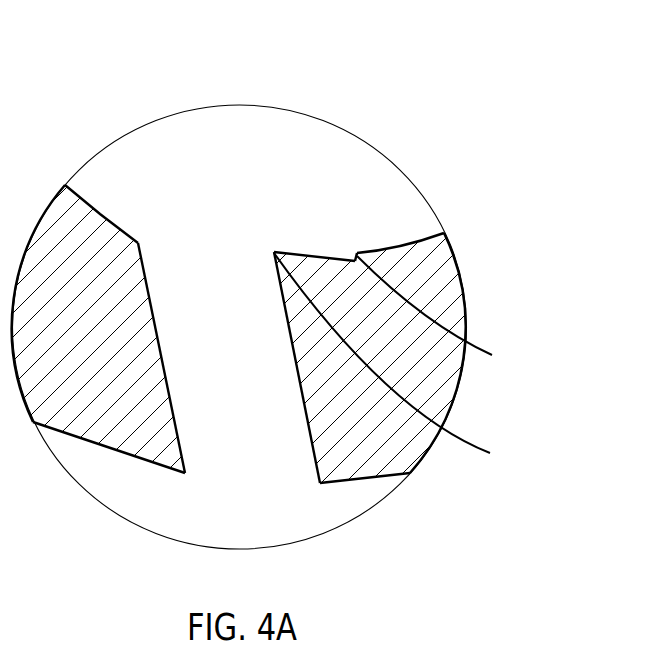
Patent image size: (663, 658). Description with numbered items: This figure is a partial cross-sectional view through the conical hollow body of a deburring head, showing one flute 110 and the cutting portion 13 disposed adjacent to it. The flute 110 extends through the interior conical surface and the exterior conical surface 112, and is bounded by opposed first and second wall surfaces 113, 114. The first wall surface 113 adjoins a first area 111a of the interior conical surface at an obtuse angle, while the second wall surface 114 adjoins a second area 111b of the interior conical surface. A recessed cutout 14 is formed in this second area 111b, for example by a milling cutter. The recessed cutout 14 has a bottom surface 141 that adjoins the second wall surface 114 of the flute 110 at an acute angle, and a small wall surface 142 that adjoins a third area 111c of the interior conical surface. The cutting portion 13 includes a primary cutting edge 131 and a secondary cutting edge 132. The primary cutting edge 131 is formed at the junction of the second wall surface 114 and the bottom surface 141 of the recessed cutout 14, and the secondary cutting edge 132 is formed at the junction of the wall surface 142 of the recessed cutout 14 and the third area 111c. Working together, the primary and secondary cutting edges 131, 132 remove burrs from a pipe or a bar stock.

The flute 110 is at (230, 258).
The first area of the interior conical surface 111a is at (100, 213).
The second area of the interior conical surface 111b is at (300, 213).
The third area of the interior conical surface 111c is at (402, 240).
The exterior conical surface 112 is at (107, 448).
The first wall surface 113 is at (163, 360).
The second wall surface 114 is at (298, 370).
The cutting portion 13 is at (441, 360).
The primary cutting edge 131 is at (548, 357).
The secondary cutting edge 132 is at (451, 315).
The recessed cutout 14 is at (403, 140).
The bottom surface 141 is at (317, 253).
The wall surface 142 is at (353, 253).